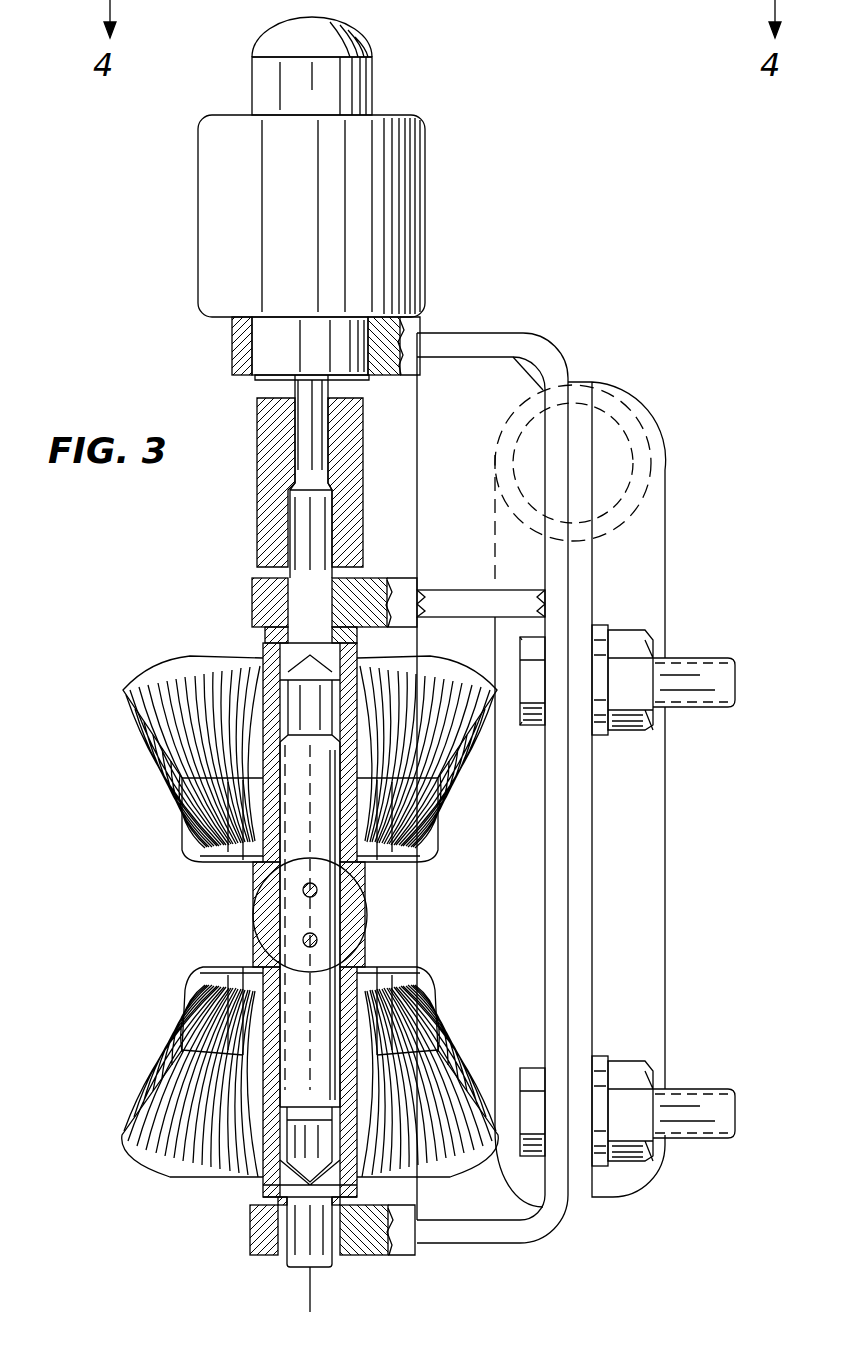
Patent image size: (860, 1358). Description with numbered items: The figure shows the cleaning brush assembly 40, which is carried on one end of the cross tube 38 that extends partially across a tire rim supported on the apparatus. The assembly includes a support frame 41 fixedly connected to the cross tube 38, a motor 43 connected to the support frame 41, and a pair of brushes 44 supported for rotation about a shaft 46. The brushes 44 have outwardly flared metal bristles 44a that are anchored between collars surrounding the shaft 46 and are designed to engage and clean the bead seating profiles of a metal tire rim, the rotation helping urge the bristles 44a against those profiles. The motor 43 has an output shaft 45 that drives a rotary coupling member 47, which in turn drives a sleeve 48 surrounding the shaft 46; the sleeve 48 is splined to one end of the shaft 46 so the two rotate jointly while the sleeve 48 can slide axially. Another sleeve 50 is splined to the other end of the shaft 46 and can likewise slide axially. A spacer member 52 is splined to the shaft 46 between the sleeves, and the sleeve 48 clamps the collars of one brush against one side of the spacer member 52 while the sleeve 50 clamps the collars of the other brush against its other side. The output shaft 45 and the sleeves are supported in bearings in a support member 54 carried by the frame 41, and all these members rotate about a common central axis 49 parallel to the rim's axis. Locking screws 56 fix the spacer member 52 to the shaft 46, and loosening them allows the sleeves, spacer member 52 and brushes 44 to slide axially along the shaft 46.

The cross tube 38 is at (656, 478).
The cleaning brush assembly 40 is at (647, 351).
The support frame 41 is at (680, 852).
The motor 43 is at (213, 232).
The brushes 44 is at (172, 802).
The metal bristles 44a is at (185, 742).
The output shaft 45 is at (302, 442).
The shaft 46 is at (323, 1013).
The rotary coupling member 47 is at (268, 486).
The sleeve 48 is at (356, 712).
The common central axis 49 is at (305, 1283).
The sleeve 50 is at (352, 1128).
The spacer member 52 is at (366, 870).
The support member 54 is at (473, 342).
The locking screws 56 is at (303, 938).